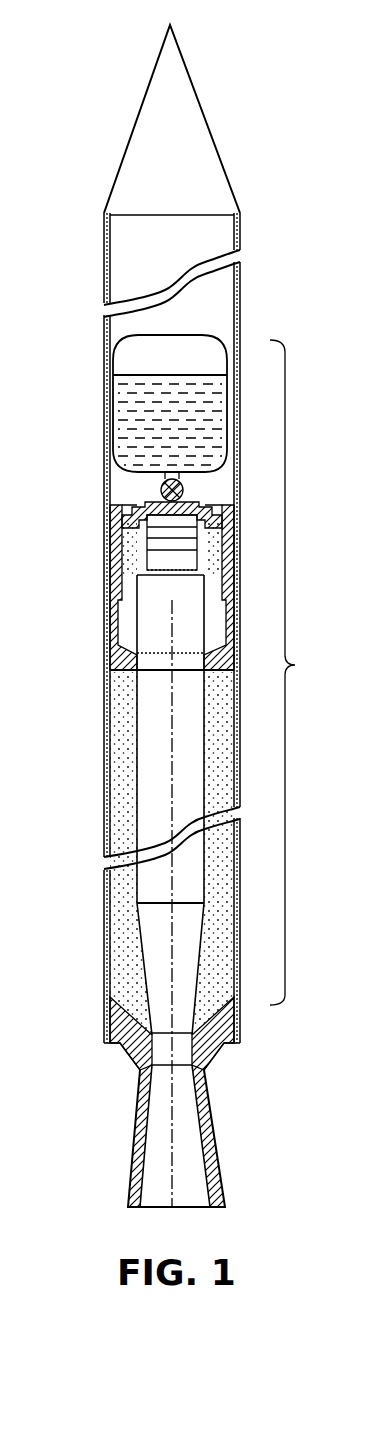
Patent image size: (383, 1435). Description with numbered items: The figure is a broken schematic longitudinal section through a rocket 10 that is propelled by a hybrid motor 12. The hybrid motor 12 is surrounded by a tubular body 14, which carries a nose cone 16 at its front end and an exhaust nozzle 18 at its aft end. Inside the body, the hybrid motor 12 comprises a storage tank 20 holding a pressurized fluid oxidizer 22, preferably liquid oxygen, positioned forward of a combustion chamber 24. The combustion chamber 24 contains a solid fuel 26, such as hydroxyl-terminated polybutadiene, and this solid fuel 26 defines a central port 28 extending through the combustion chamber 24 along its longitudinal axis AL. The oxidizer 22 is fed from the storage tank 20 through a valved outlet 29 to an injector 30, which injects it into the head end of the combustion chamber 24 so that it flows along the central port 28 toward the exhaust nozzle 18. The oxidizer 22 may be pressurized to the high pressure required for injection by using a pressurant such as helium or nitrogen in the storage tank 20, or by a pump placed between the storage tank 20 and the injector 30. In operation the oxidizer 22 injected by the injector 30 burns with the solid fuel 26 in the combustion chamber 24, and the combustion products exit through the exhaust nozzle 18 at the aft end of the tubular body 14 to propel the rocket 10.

The rocket 10 is at (252, 295).
The hybrid motor 12 is at (226, 705).
The tubular body 14 is at (105, 450).
The nose cone 16 is at (137, 130).
The exhaust nozzle 18 is at (137, 1117).
The storage tank 20 is at (122, 352).
The pressurized fluid oxidizer 22 is at (123, 400).
The combustion chamber 24 is at (143, 700).
The solid fuel 26 is at (105, 742).
The central port 28 is at (143, 798).
The valved outlet 29 is at (160, 490).
The injector 30 is at (109, 593).
The longitudinal axis AL is at (137, 892).